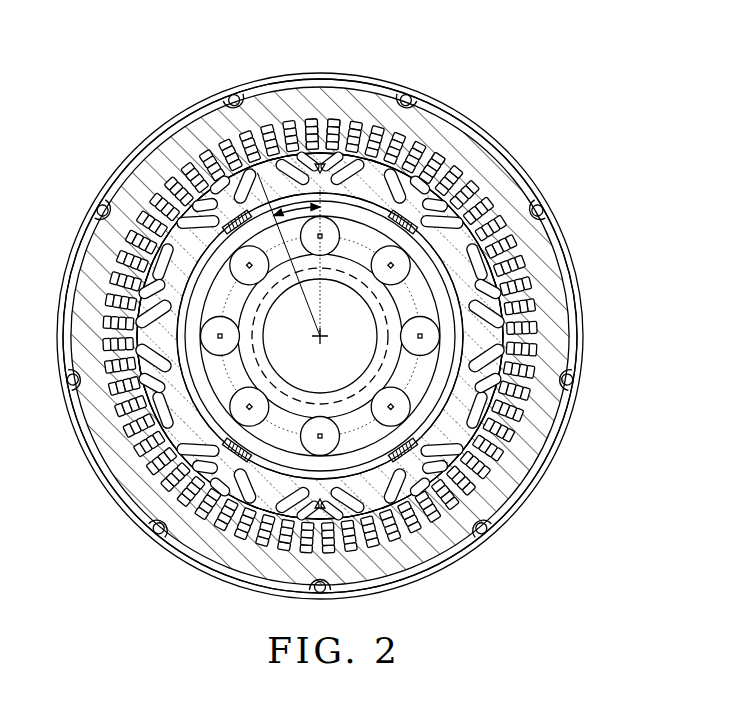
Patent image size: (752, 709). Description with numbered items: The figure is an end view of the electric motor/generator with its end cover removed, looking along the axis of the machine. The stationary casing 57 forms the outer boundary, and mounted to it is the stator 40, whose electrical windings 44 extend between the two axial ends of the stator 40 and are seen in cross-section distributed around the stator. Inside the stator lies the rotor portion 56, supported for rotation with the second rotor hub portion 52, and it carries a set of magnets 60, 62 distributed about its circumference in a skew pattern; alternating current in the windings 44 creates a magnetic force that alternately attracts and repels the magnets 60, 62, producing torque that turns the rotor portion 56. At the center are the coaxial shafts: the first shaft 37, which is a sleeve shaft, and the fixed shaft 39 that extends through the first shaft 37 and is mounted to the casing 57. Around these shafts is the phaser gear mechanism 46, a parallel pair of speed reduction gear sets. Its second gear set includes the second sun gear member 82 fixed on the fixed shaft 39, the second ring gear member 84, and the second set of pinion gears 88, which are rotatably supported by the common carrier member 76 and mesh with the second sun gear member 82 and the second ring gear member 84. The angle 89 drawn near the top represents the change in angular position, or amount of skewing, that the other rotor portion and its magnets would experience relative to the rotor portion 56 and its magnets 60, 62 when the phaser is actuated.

The first shaft 37 is at (427, 370).
The fixed shaft 39 is at (345, 342).
The stator 40 is at (262, 78).
The electrical windings 44 is at (320, 125).
The phaser gear mechanism 46 is at (455, 392).
The second rotor hub portion 52 is at (440, 292).
The second rotor portion 56 is at (445, 275).
The casing 57 is at (155, 135).
The magnet 60 is at (437, 155).
The magnet 62 is at (418, 178).
The carrier member 76 is at (491, 527).
The second sun gear member 82 is at (372, 398).
The second ring gear member 84 is at (508, 262).
The second set of pinion gears 88 is at (513, 507).
The angle 89 is at (190, 172).